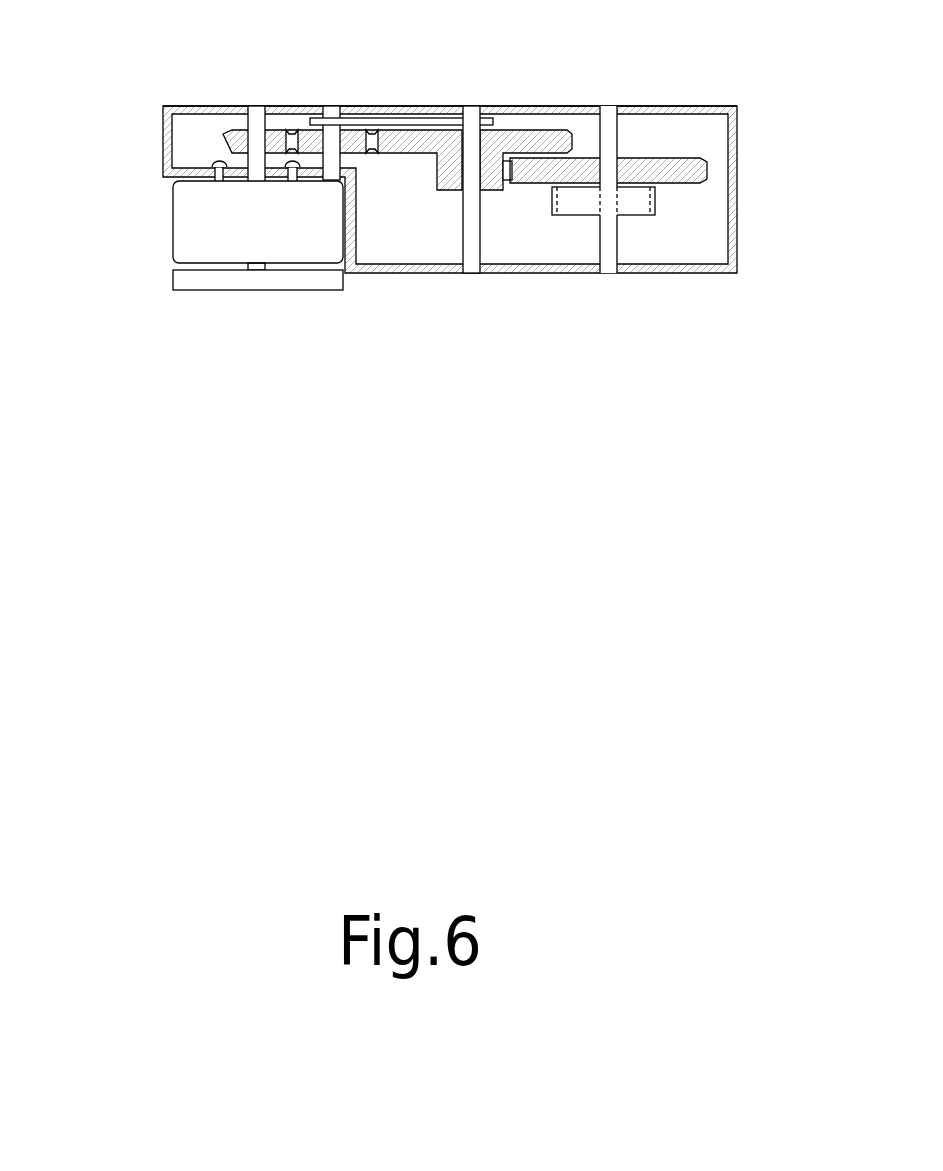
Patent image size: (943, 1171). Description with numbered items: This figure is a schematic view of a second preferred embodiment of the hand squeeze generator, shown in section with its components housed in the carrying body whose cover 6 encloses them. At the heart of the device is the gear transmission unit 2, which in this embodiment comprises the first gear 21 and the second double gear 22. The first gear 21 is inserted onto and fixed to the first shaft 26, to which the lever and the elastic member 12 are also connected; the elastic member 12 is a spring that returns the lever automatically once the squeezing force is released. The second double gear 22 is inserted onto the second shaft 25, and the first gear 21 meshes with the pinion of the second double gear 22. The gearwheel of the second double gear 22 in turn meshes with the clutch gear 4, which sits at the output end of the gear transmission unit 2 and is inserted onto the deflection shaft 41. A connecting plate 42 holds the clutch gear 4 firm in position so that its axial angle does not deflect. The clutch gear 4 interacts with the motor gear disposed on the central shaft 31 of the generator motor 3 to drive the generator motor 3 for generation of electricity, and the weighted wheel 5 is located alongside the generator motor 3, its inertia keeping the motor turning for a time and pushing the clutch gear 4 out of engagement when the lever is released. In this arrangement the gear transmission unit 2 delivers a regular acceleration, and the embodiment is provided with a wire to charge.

The gear transmission unit 2 is at (537, 237).
The cover 6 is at (728, 110).
The generator motor 3 is at (185, 220).
The weighted wheel 5 is at (183, 283).
The central shaft 31 is at (259, 120).
The clutch gear 4 is at (310, 137).
The deflection shaft 41 is at (332, 118).
The connecting plate 42 is at (402, 121).
The second shaft 25 is at (472, 117).
The second double gear 22 is at (511, 140).
The first shaft 26 is at (607, 117).
The first gear 21 is at (690, 167).
The elastic member 12 is at (635, 205).